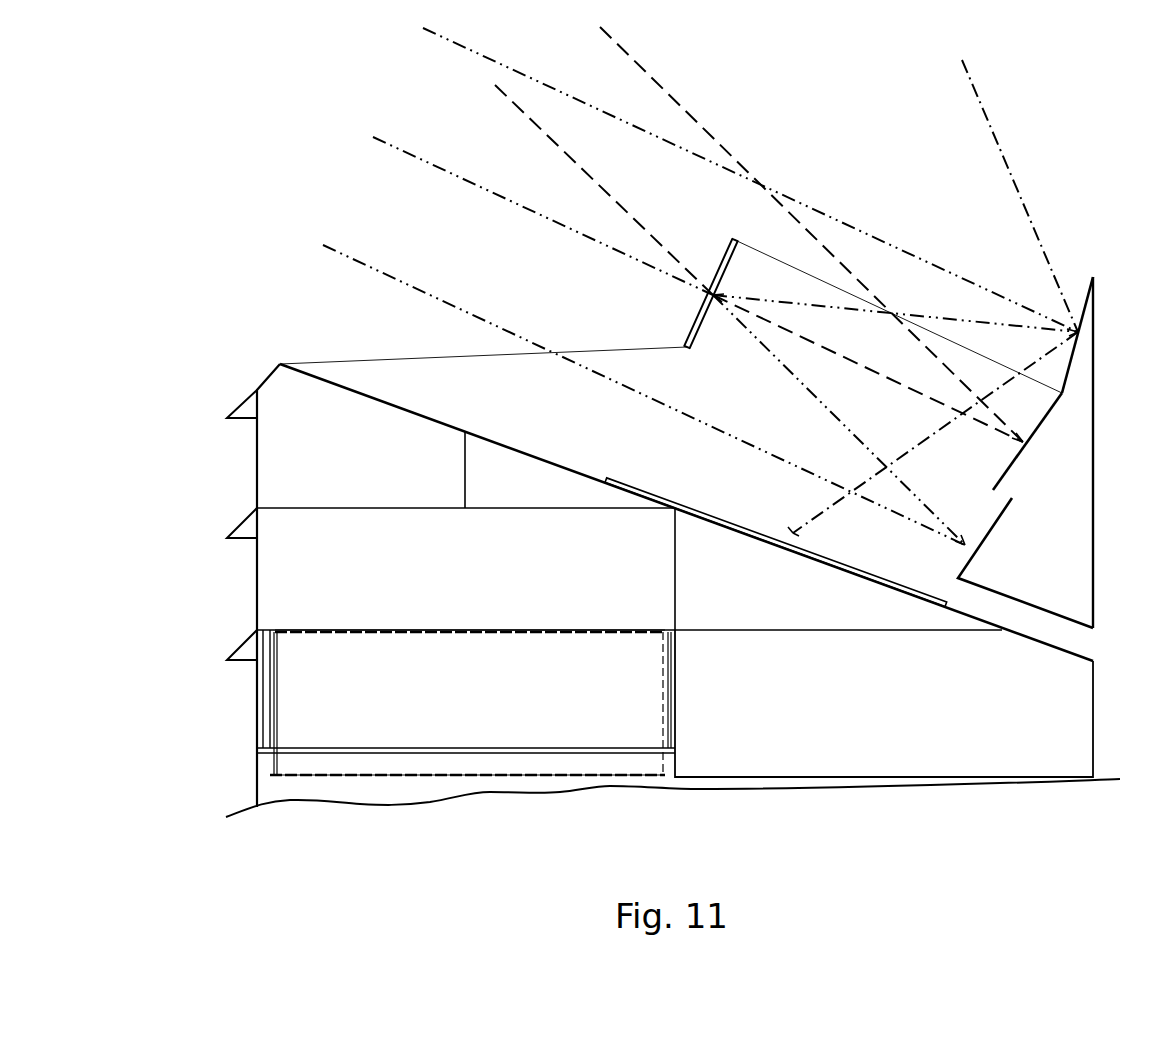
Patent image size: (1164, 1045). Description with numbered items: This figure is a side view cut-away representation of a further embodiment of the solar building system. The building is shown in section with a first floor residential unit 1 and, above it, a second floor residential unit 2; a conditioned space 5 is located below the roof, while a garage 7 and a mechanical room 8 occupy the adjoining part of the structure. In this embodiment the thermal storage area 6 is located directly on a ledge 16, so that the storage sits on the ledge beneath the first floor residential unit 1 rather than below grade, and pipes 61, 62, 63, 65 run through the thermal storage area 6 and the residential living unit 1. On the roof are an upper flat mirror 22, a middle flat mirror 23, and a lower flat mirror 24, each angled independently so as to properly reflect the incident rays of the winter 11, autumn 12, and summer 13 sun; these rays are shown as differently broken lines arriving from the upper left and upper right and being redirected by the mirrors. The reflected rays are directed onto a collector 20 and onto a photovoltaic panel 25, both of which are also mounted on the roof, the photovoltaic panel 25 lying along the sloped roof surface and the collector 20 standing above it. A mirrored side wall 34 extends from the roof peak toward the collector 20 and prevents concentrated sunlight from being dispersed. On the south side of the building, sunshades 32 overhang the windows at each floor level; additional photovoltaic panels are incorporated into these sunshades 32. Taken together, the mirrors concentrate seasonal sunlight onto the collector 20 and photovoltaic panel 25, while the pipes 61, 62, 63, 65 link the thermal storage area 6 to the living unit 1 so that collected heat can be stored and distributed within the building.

The first floor residential unit 1 is at (466, 681).
The second floor residential unit 2 is at (580, 598).
The conditioned space 5 is at (418, 462).
The thermal storage area 6 is at (352, 786).
The garage 7 is at (988, 740).
The mechanical room 8 is at (830, 604).
The winter rays 11 is at (467, 49).
The autumn rays 12 is at (700, 122).
The summer rays 13 is at (987, 113).
The ledge 16 is at (605, 787).
The collector 20 is at (737, 240).
The upper flat mirror 22 is at (1080, 337).
The middle flat mirror 23 is at (1027, 443).
The lower flat mirror 24 is at (978, 545).
The photovoltaic panel 25 is at (672, 497).
The sunshades 32 is at (245, 400).
The mirrored side wall 34 is at (330, 360).
The pipe 61 is at (386, 626).
The pipe 62 is at (277, 718).
The pipe 63 is at (660, 700).
The pipe 65 is at (382, 775).